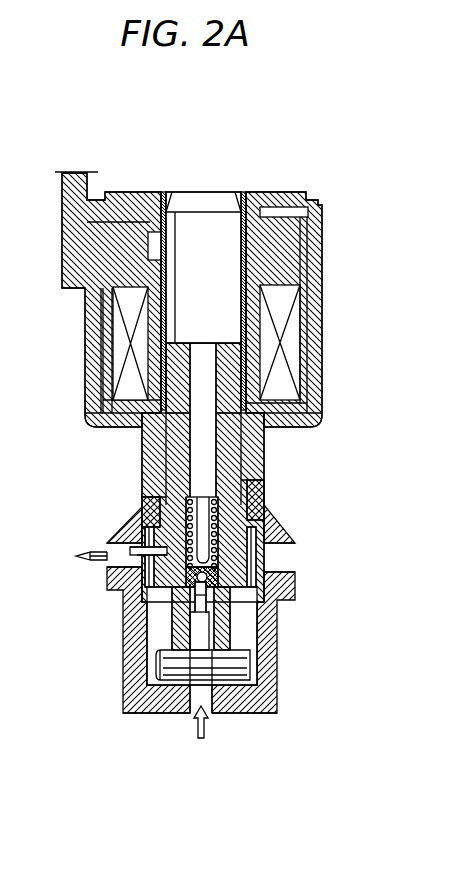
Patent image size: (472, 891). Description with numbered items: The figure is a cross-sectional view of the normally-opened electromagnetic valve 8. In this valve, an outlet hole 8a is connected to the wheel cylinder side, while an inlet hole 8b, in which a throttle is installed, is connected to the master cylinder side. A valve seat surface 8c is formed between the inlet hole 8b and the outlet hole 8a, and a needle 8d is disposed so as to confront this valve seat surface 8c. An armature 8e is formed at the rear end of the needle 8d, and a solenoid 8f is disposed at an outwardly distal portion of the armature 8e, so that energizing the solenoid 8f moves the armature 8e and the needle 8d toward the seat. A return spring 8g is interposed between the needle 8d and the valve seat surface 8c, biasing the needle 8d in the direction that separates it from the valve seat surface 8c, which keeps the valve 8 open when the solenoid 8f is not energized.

The normally-opened electromagnetic valve 8 is at (243, 184).
The outlet hole 8a is at (132, 545).
The inlet hole 8b is at (197, 630).
The valve seat surface 8c is at (254, 602).
The needle 8d is at (262, 540).
The armature 8e is at (197, 226).
The solenoid 8f is at (118, 344).
The return spring 8g is at (185, 510).